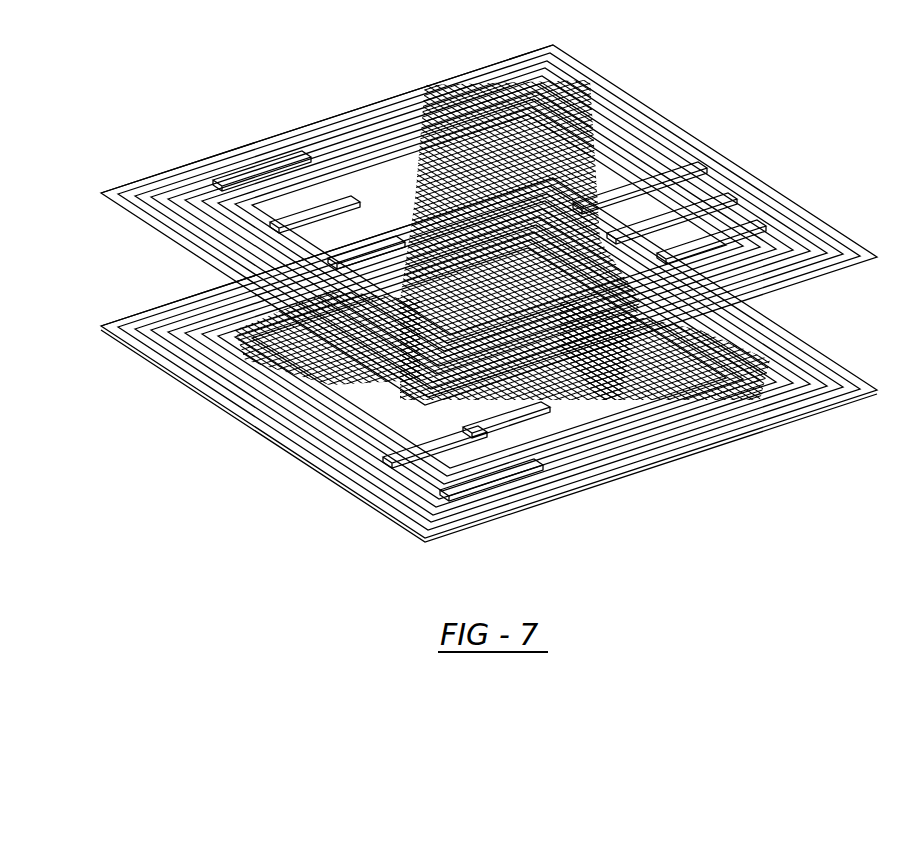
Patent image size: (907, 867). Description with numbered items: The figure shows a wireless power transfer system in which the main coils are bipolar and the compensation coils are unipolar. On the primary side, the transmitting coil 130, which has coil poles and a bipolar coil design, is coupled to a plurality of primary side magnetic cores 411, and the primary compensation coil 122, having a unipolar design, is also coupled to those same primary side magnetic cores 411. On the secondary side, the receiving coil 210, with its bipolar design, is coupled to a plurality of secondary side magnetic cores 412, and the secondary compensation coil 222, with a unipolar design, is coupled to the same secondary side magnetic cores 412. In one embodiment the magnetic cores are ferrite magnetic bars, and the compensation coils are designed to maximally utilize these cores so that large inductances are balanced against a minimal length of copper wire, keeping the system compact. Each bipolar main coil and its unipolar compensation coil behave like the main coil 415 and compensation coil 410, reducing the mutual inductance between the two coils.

The receiving coil 210 is at (390, 100).
The secondary compensation coil 222 is at (587, 150).
The secondary side magnetic cores 412 is at (697, 237).
The main coil 415 is at (96, 197).
The compensation coil 410 is at (390, 310).
The primary side magnetic cores 411 is at (433, 455).
The primary compensation coil 122 is at (733, 363).
The transmitting coil 130 is at (697, 443).